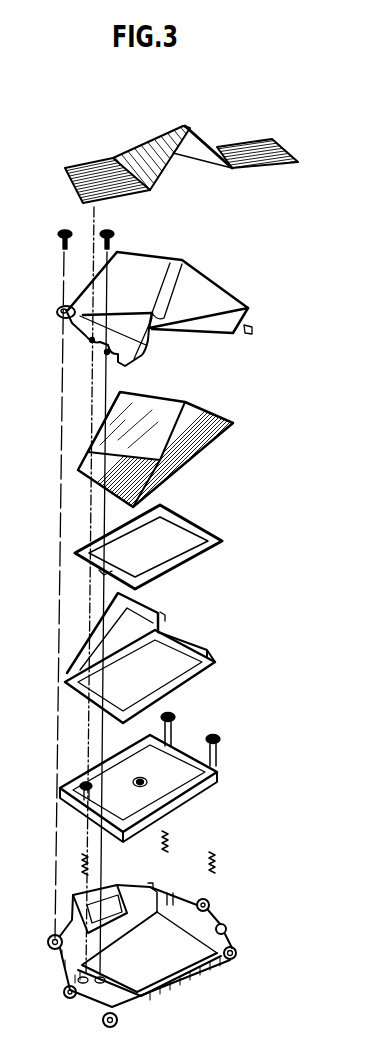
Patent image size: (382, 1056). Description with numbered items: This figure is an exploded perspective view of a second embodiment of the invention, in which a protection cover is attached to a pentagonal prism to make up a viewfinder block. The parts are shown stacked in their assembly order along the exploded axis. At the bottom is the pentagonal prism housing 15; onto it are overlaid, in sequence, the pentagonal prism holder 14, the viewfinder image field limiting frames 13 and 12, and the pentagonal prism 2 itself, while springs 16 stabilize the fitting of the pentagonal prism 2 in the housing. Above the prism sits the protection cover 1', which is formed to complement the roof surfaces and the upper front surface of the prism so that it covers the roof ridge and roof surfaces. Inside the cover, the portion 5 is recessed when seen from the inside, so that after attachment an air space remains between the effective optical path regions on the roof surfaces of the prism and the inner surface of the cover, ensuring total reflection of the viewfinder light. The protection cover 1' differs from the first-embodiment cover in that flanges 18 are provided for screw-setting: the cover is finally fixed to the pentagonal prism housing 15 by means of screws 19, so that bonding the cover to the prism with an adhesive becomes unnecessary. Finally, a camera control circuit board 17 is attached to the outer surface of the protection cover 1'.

The camera control circuit board 17 is at (270, 163).
The screws 19 is at (60, 248).
The recessed portion 5 is at (153, 287).
The protection cover 1' is at (161, 303).
The flanges 18 is at (78, 332).
The pentagonal prism 2 is at (163, 422).
The viewfinder image field limiting frame 12 is at (218, 528).
The viewfinder image field limiting frame 13 is at (217, 660).
The pentagonal prism holder 14 is at (220, 770).
The springs 16 is at (216, 863).
The pentagonal prism housing 15 is at (215, 958).